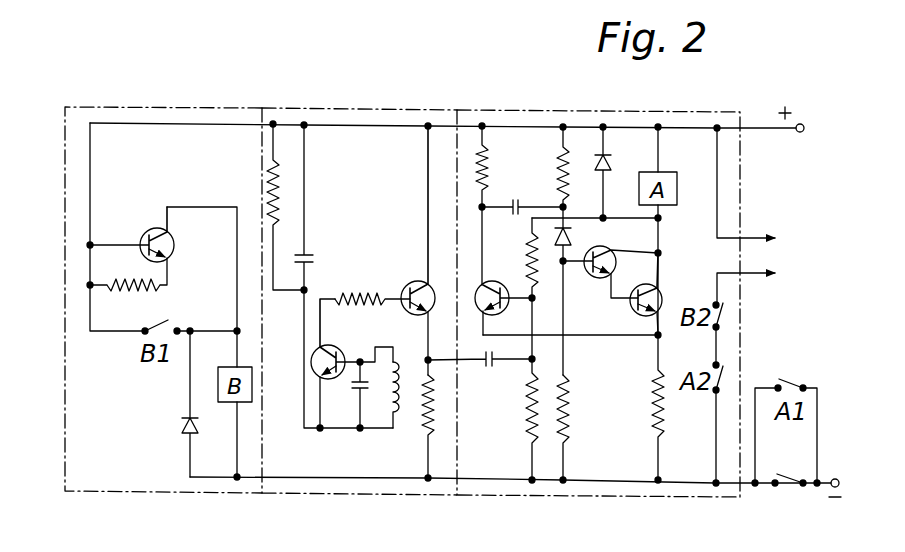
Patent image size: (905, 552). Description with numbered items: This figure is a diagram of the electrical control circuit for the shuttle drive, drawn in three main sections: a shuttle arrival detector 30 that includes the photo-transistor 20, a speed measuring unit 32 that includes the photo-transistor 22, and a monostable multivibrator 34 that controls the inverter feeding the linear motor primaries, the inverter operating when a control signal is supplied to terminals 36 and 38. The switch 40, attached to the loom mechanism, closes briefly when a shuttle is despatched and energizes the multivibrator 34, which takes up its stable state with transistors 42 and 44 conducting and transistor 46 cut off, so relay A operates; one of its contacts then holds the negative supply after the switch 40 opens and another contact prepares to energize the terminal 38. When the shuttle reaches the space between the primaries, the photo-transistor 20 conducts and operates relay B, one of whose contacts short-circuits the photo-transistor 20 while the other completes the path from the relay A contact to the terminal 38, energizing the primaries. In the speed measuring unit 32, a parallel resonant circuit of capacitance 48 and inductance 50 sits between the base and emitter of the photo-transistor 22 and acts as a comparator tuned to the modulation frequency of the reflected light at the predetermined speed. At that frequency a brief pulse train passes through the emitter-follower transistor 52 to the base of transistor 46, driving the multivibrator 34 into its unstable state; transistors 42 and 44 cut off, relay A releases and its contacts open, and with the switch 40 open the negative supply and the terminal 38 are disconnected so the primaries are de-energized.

The photo-transistor 20 is at (150, 222).
The photo-transistor 22 is at (316, 349).
The shuttle arrival detector 30 is at (187, 108).
The speed measuring unit 32 is at (380, 108).
The monostable multivibrator 34 is at (605, 110).
The terminal 36 is at (780, 237).
The terminal 38 is at (780, 282).
The switch 40 is at (785, 482).
The transistor 42 is at (610, 281).
The transistor 44 is at (662, 294).
The transistor 46 is at (493, 283).
The capacitance 48 is at (358, 388).
The inductance 50 is at (388, 414).
The transistor 52 is at (414, 281).